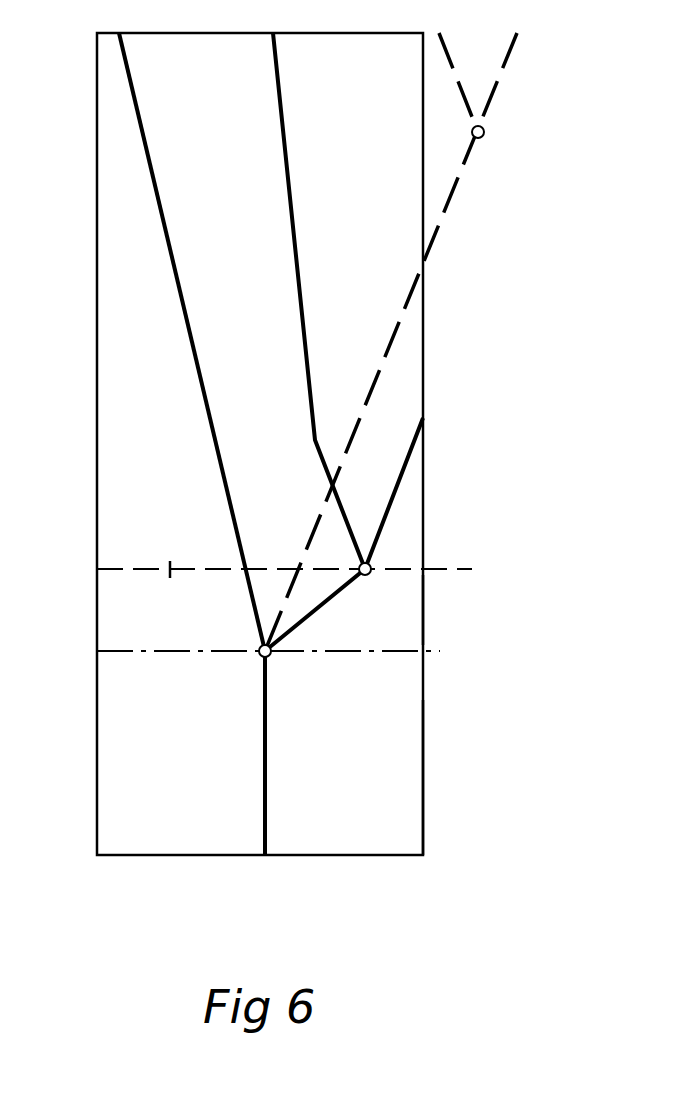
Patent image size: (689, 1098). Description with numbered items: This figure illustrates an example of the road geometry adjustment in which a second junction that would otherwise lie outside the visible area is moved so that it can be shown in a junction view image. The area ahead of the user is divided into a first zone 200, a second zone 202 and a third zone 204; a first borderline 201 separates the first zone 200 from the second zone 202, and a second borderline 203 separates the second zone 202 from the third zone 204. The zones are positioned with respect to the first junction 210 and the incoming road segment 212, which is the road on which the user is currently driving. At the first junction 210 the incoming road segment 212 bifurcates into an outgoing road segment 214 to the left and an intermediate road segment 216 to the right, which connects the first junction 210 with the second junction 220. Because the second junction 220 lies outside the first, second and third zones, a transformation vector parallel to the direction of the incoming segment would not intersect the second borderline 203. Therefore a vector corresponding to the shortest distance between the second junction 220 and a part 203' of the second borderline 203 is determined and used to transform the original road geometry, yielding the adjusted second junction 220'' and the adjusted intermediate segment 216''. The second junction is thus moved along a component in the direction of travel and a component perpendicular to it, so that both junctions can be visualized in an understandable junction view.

The first zone 200 is at (410, 757).
The first borderline 201 is at (425, 653).
The second zone 202 is at (412, 604).
The second borderline 203 is at (304, 538).
The part of the second borderline 203' is at (162, 542).
The third zone 204 is at (106, 101).
The first junction 210 is at (263, 657).
The incoming road segment 212 is at (264, 793).
The outgoing road segment 214 is at (204, 394).
The intermediate road segment 216 is at (392, 342).
The adjusted intermediate segment 216'' is at (344, 342).
The second junction 220 is at (511, 146).
The adjusted second junction 220'' is at (424, 519).